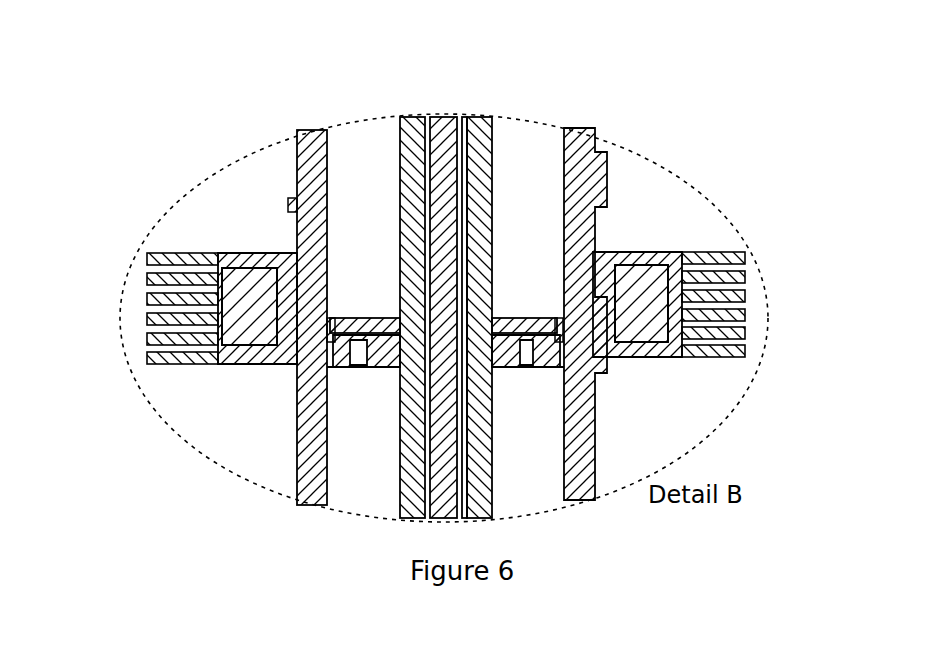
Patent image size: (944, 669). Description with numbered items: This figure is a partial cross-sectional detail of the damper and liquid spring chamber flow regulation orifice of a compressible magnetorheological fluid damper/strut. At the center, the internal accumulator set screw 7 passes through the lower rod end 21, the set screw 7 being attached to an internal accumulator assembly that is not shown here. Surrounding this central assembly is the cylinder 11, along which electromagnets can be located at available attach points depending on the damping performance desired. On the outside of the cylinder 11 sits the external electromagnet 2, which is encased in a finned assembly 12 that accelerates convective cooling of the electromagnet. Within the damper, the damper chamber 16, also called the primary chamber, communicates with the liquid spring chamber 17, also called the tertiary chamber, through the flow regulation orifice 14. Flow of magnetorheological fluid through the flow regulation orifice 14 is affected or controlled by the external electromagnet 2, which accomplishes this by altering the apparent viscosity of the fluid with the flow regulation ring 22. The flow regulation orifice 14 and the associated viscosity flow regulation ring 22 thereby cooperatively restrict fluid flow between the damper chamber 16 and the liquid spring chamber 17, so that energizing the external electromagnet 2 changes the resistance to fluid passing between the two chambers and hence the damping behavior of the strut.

The external electromagnet 2 is at (632, 302).
The internal accumulator set screw 7 is at (513, 272).
The cylinder 11 is at (295, 435).
The finned assembly 12 is at (147, 284).
The flow regulation orifice 14 is at (538, 365).
The damper chamber 16 is at (522, 245).
The liquid spring chamber 17 is at (360, 477).
The lower rod end 21 is at (493, 153).
The flow regulation ring 22 is at (365, 314).